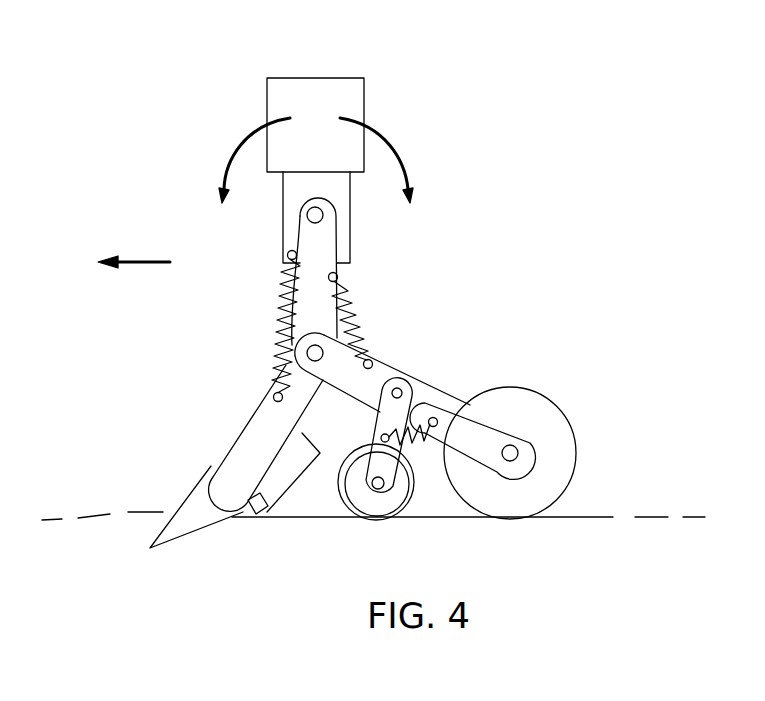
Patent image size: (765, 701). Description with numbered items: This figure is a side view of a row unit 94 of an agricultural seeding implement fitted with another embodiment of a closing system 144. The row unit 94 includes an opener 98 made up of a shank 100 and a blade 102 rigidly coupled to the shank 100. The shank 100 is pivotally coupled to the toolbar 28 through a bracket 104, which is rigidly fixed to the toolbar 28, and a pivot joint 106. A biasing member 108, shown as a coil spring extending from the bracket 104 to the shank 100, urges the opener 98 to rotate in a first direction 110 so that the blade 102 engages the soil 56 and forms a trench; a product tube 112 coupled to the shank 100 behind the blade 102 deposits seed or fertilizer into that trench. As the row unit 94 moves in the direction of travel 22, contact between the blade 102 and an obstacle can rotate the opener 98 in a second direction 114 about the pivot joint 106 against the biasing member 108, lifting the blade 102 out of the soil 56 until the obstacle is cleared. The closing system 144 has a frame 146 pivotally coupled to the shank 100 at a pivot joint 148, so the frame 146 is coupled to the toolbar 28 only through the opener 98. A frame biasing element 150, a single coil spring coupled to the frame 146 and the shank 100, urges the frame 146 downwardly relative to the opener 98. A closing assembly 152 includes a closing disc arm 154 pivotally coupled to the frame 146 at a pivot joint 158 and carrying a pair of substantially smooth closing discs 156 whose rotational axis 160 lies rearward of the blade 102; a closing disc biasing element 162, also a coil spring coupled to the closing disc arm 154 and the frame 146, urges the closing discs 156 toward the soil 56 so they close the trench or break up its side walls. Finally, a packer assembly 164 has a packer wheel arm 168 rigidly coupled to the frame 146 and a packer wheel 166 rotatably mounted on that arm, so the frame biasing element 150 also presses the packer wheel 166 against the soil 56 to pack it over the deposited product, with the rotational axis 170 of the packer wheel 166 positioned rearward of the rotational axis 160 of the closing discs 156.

The direction of travel 22 is at (140, 258).
The toolbar 28 is at (367, 100).
The soil 56 is at (570, 517).
The row unit 94 is at (197, 96).
The opener 98 is at (216, 408).
The shank 100 is at (230, 453).
The blade 102 is at (192, 474).
The bracket 104 is at (350, 194).
The pivot joint 106 is at (316, 222).
The biasing member 108 is at (282, 303).
The first direction 110 is at (385, 143).
The product tube 112 is at (260, 505).
The second direction 114 is at (250, 137).
The closing system 144 is at (467, 290).
The frame 146 is at (347, 377).
The pivot joint 148 is at (305, 355).
The frame biasing element 150 is at (345, 313).
The closing assembly 152 is at (320, 465).
The closing disc arm 154 is at (350, 488).
The closing discs 156 is at (398, 495).
The pivot joint 158 is at (400, 378).
The rotational axis 160 is at (376, 490).
The closing disc biasing element 162 is at (437, 404).
The packer assembly 164 is at (510, 342).
The packer wheel 166 is at (553, 395).
The packer wheel arm 168 is at (420, 402).
The rotational axis 170 is at (512, 452).